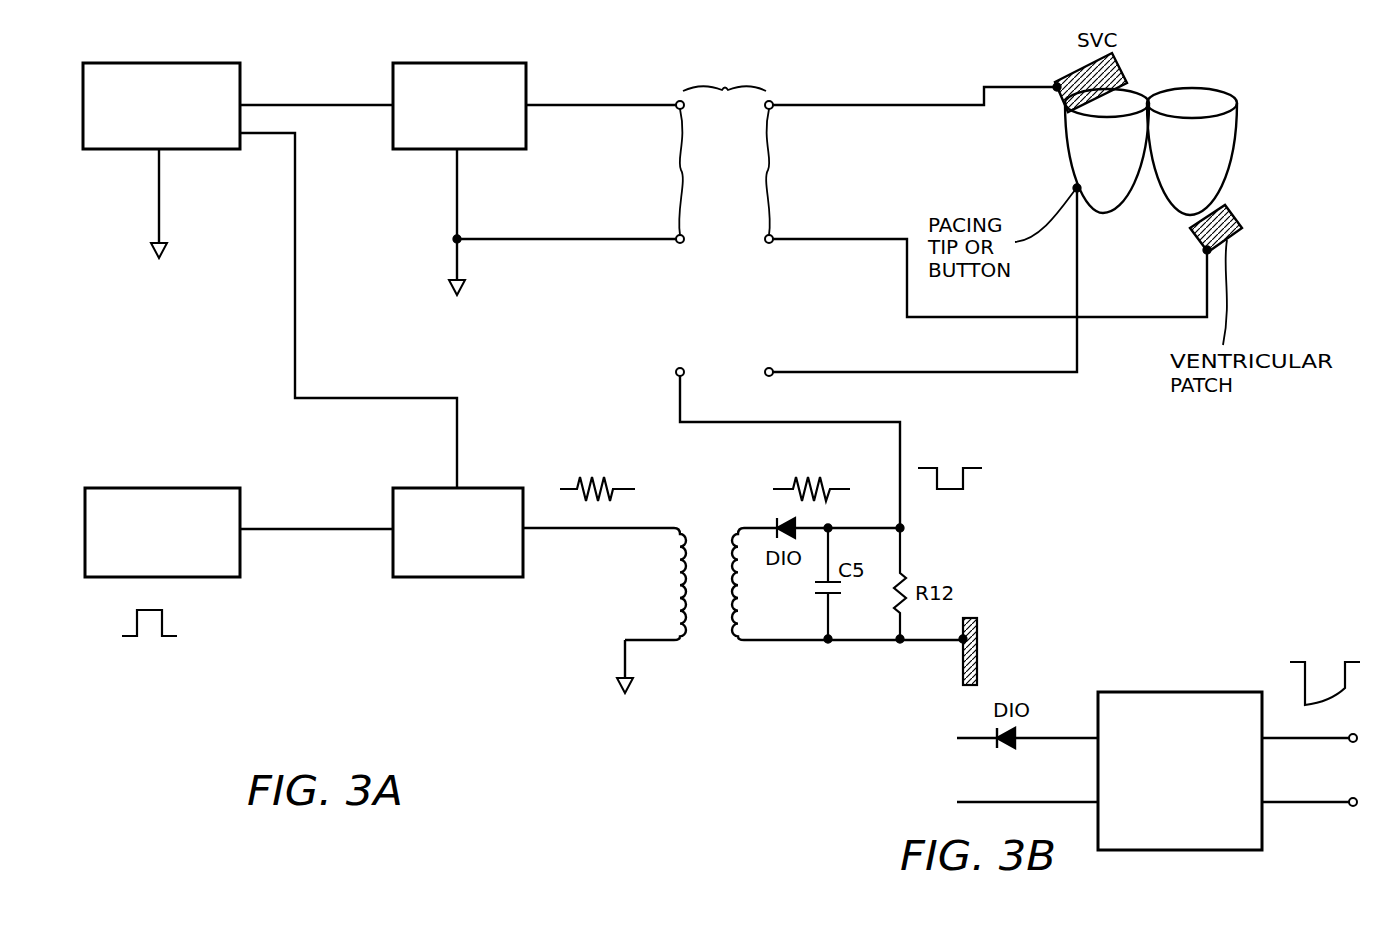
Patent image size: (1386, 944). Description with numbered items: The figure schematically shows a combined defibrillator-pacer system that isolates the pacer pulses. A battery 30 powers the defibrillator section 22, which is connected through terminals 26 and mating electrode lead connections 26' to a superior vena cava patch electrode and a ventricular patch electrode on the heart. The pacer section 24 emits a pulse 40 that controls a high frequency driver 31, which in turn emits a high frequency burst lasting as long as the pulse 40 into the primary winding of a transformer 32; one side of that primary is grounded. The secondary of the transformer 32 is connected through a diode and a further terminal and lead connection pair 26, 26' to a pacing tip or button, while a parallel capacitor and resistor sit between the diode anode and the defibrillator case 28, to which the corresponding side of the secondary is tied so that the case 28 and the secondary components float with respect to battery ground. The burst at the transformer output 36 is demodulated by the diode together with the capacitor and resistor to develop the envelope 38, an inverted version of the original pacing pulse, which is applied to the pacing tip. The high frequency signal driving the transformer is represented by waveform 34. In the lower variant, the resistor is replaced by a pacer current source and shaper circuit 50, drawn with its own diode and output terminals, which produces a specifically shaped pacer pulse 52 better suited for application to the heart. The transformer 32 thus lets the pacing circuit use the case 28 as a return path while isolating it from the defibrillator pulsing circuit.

In FIG. 3A, the battery 30 is at (218, 67).
In FIG. 3A, the defibrillator section 22 is at (505, 67).
In FIG. 3A, the pacer section 24 is at (190, 488).
In FIG. 3A, the high frequency driver 31 is at (407, 488).
In FIG. 3A, the terminals 26 is at (657, 238).
In FIG. 3A, the electrode lead connections 26' is at (777, 238).
In FIG. 3A, the resistor / HF signal 34 is at (588, 478).
In FIG. 3A, the output of transformer 36 is at (818, 478).
In FIG. 3A, the envelope 38 is at (965, 487).
In FIG. 3A, the transformer 32 is at (735, 638).
In FIG. 3A, the defibrillator case 28 is at (961, 672).
In FIG. 3A, the pulse 40 is at (167, 623).
In FIG. 3B, the pacer current source and shaper circuit 50 is at (1173, 692).
In FIG. 3B, the shaped pacer pulse 52 is at (1330, 665).